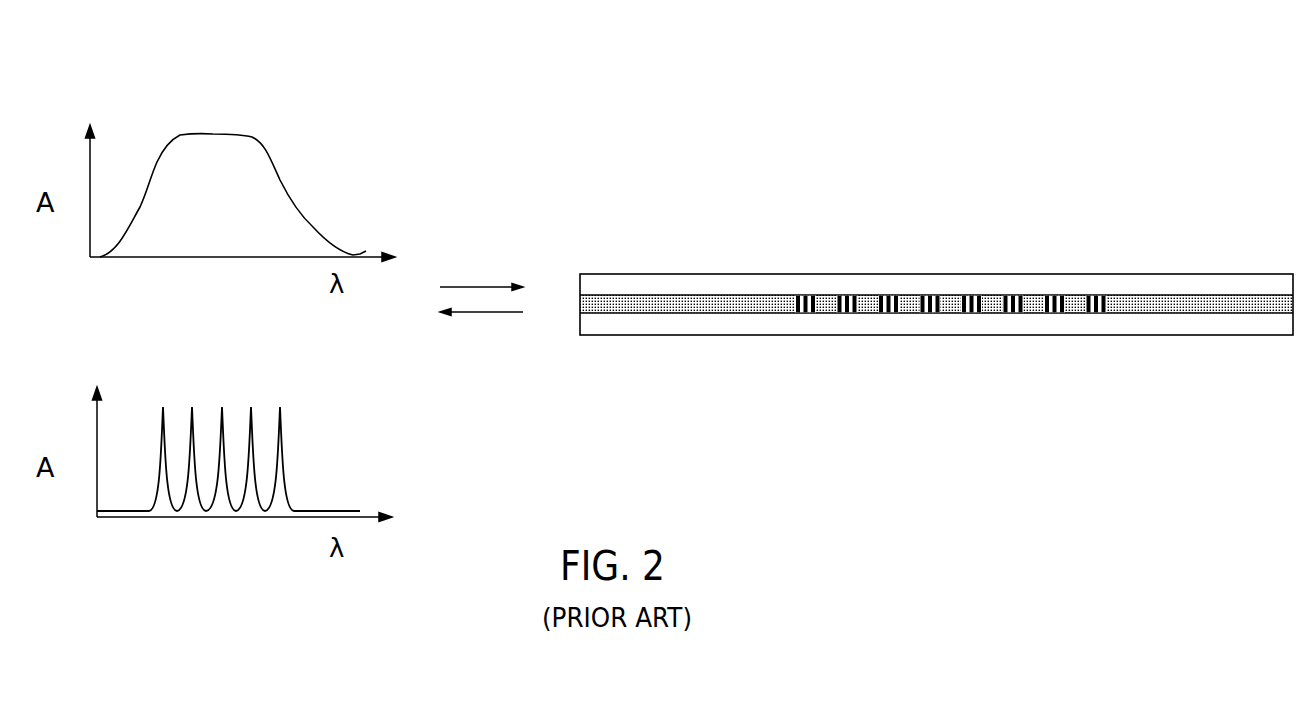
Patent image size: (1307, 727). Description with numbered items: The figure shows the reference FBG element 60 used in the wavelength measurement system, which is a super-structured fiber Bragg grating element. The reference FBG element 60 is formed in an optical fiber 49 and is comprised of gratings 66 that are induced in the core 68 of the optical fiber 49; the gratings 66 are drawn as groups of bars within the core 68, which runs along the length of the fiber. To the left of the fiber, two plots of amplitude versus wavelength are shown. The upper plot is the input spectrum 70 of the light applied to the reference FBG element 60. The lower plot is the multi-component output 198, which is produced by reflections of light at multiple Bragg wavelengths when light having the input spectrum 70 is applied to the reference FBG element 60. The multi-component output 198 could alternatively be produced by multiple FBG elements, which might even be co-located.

The input spectrum 70 is at (194, 107).
The multi-component output 198 is at (268, 380).
The reference FBG element 60 is at (936, 213).
The optical fiber 49 is at (703, 274).
The gratings 66 is at (905, 277).
The core 68 is at (1140, 296).